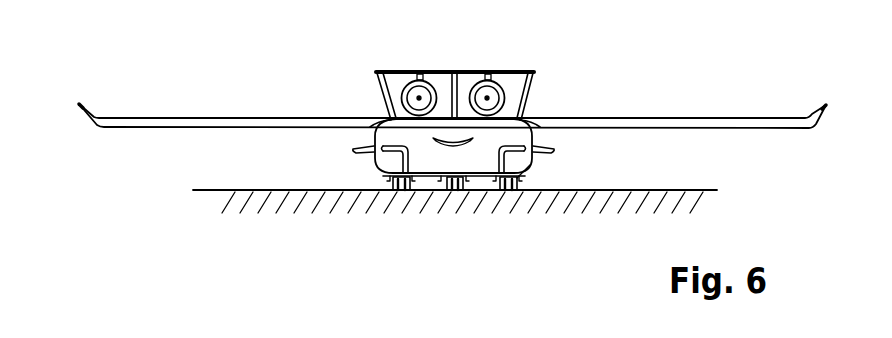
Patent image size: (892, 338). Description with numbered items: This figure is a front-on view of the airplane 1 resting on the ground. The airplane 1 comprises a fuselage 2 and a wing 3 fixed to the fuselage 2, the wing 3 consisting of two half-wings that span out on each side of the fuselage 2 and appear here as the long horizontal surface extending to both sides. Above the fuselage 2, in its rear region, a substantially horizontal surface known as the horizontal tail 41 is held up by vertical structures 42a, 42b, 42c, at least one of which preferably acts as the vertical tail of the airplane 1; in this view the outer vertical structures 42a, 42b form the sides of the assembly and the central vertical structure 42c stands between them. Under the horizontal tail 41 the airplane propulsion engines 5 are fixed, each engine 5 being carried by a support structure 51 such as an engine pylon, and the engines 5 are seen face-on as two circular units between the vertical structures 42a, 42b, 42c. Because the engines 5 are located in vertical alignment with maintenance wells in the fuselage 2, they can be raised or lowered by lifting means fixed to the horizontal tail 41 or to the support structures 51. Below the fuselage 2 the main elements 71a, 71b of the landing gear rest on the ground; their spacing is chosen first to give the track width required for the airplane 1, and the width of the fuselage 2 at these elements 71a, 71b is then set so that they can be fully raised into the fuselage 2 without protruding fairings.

The airplane 1 is at (274, 60).
The fuselage 2 is at (364, 168).
The wing 3 is at (695, 100).
The propulsion engine 5 is at (393, 70).
The support structure 51 is at (419, 72).
The horizontal tail 41 is at (513, 70).
The vertical structure 42a is at (377, 74).
The vertical structure 42b is at (533, 96).
The vertical structure 42c is at (463, 71).
The main landing gear element 71a is at (383, 192).
The main landing gear element 71b is at (526, 193).